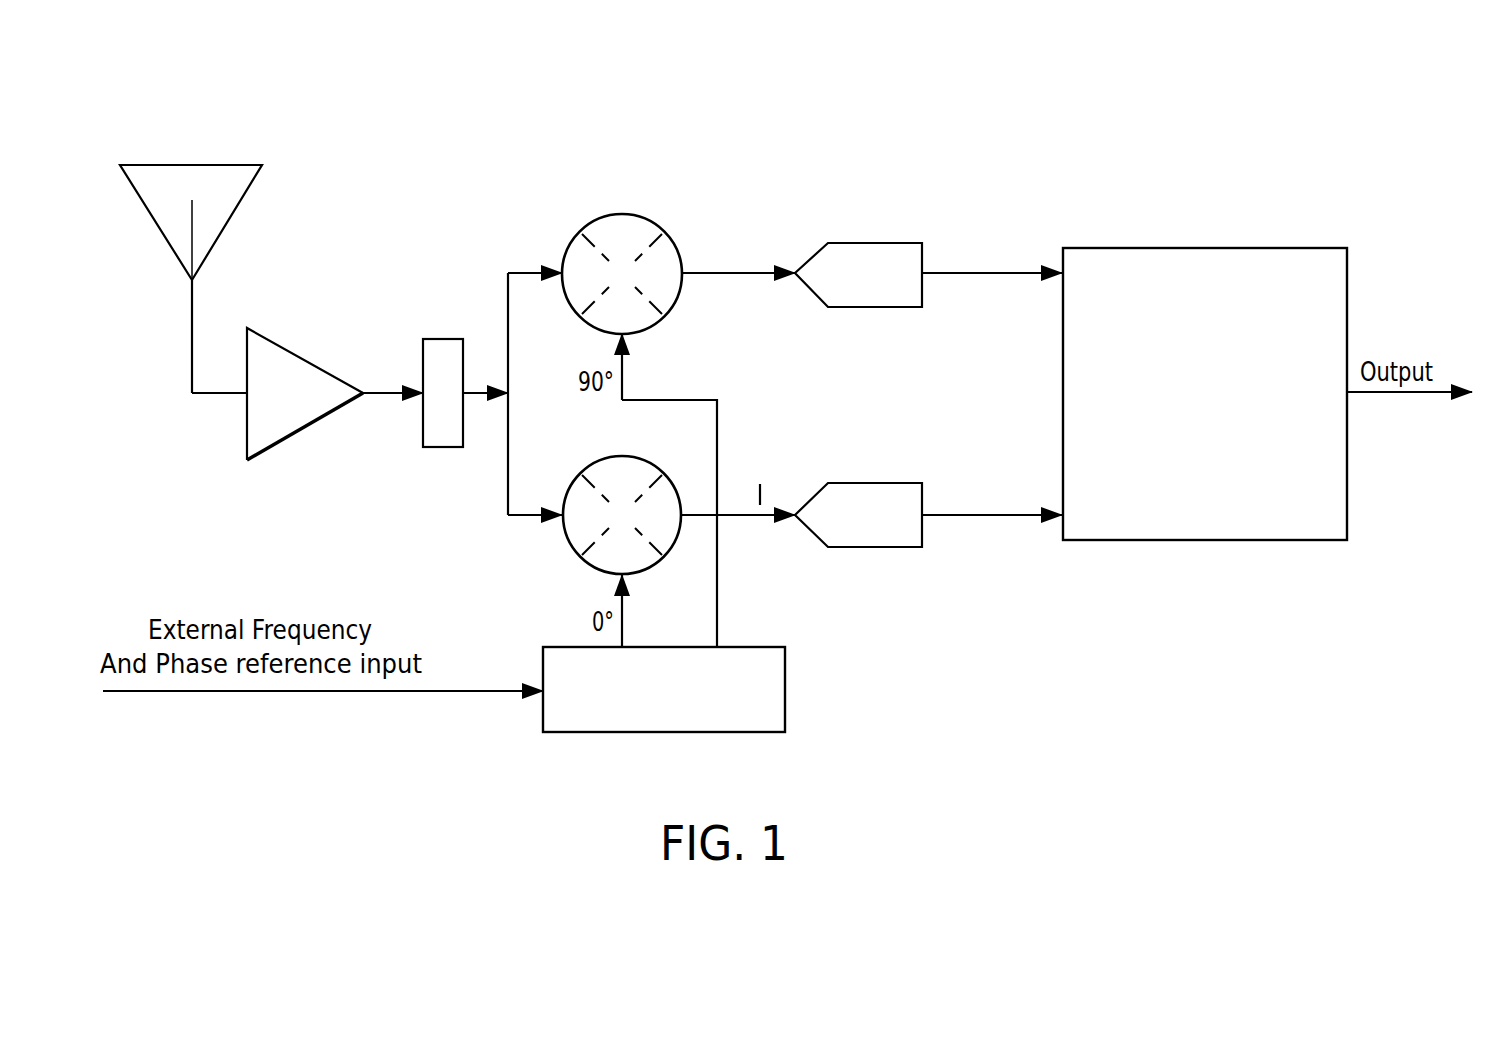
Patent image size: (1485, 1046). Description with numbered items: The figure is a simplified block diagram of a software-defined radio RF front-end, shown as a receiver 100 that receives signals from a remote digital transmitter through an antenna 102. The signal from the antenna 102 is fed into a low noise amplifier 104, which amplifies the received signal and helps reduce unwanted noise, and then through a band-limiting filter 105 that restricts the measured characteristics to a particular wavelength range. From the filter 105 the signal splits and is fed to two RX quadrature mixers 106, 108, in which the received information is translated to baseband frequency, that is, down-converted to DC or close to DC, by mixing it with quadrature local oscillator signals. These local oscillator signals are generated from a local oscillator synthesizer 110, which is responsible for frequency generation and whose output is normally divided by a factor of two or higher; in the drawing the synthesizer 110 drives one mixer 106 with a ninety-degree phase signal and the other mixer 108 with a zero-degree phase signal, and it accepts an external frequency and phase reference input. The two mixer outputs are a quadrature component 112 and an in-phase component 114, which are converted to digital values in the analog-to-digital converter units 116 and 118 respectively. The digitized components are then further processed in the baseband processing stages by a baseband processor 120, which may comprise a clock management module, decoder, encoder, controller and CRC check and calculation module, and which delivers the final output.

The receiver 100 is at (810, 143).
The antenna 102 is at (219, 237).
The low noise amplifier 104 is at (313, 362).
The band-limiting filter 105 is at (445, 338).
The RX quadrature mixer 106 is at (630, 213).
The RX quadrature mixer 108 is at (588, 463).
The local oscillator synthesizer 110 is at (785, 685).
The quadrature component 112 is at (693, 267).
The in-phase component 114 is at (727, 515).
The analog-to-digital converter unit 116 is at (872, 242).
The analog-to-digital converter unit 118 is at (872, 483).
The baseband processor 120 is at (1257, 248).